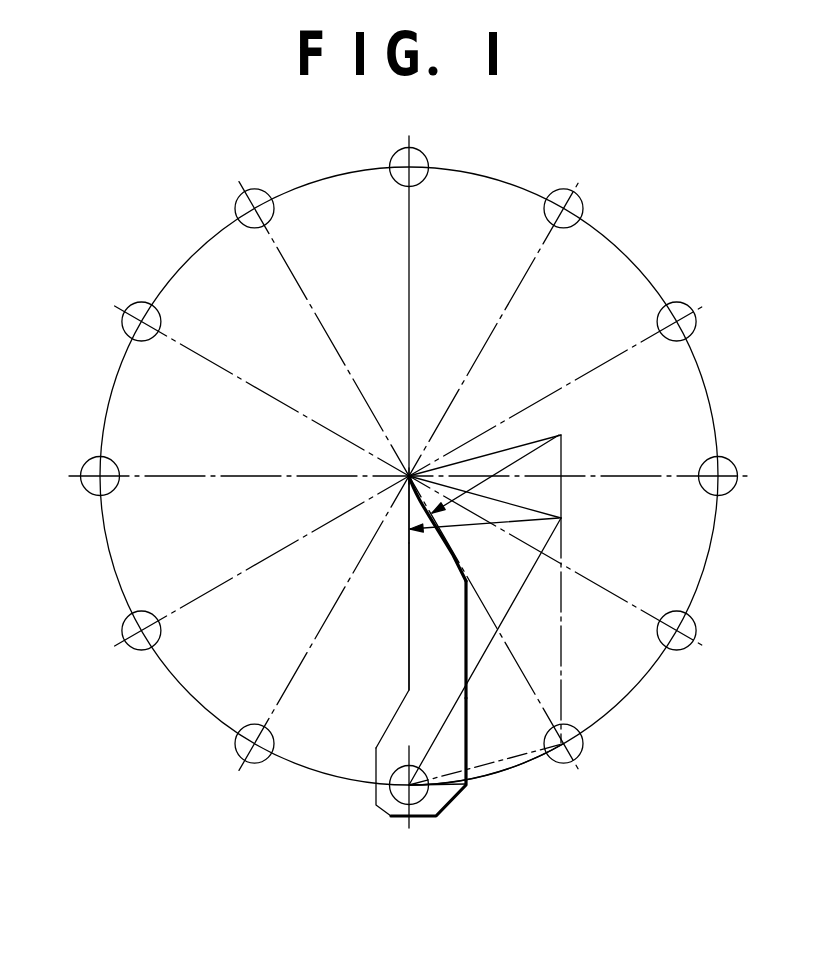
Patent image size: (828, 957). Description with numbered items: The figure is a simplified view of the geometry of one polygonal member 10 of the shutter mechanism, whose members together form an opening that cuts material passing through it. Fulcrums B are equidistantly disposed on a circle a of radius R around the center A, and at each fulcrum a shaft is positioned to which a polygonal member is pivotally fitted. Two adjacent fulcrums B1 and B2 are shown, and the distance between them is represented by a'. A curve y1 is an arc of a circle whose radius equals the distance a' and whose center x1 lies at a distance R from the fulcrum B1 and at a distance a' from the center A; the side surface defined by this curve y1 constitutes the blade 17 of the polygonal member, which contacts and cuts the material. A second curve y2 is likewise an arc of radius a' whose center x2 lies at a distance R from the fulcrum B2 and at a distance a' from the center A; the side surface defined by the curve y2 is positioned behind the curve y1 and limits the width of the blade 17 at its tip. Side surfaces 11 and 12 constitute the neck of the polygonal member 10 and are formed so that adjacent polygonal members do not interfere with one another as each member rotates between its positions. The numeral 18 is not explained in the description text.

The polygonal member 10 is at (420, 820).
The side surface 11 is at (408, 692).
The side surface 12 is at (463, 645).
The blade 17 is at (398, 520).
The rake edge 18 is at (400, 495).
The center A is at (409, 476).
The fulcrum B is at (86, 498).
The fulcrum B1 is at (392, 812).
The fulcrum B2 is at (583, 752).
The center of curve y1 x1 is at (560, 516).
The center of curve y2 x2 is at (560, 436).
The curve y1 is at (405, 546).
The curve y2 is at (420, 520).
The circle a is at (486, 775).
The distance between adjacent fulcrums a' is at (486, 655).